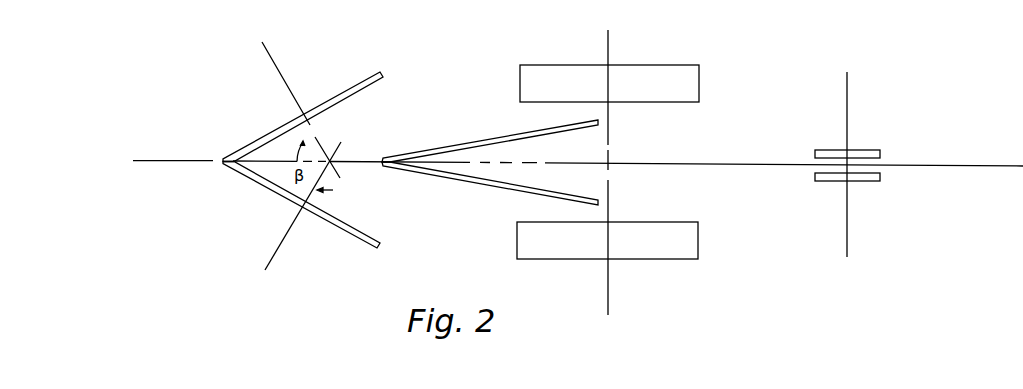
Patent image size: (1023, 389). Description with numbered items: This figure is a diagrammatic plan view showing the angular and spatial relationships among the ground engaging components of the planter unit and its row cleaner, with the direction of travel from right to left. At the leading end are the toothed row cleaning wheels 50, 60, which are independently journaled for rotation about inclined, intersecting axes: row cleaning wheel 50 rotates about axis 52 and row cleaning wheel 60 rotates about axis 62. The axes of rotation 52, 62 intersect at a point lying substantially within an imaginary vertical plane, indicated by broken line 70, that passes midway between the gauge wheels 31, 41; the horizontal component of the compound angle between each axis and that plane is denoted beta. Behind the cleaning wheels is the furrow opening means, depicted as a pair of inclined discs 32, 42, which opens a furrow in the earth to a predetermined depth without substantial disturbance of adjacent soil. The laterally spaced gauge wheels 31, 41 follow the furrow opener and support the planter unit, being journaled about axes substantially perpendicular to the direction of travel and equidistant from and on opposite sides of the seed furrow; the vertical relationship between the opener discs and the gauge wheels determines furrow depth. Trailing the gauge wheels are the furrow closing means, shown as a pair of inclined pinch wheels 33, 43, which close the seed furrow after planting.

The broken line 70 is at (173, 161).
The row cleaning wheel 60 is at (273, 127).
The row cleaning wheel 50 is at (265, 192).
The axis 62 is at (280, 73).
The axis 52 is at (270, 258).
The inclined disc 42 is at (488, 135).
The inclined disc 32 is at (490, 188).
The gauge wheel 41 is at (672, 65).
The gauge wheel 31 is at (660, 259).
The pinch wheel 43 is at (862, 150).
The pinch wheel 33 is at (862, 182).